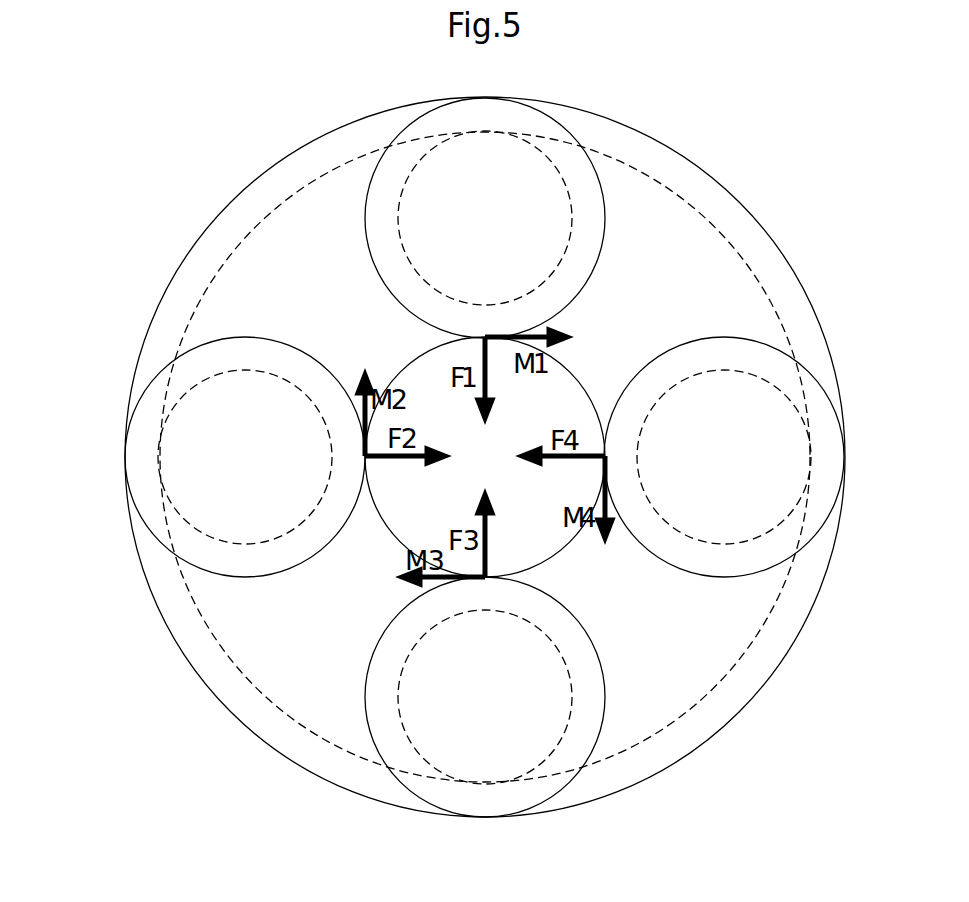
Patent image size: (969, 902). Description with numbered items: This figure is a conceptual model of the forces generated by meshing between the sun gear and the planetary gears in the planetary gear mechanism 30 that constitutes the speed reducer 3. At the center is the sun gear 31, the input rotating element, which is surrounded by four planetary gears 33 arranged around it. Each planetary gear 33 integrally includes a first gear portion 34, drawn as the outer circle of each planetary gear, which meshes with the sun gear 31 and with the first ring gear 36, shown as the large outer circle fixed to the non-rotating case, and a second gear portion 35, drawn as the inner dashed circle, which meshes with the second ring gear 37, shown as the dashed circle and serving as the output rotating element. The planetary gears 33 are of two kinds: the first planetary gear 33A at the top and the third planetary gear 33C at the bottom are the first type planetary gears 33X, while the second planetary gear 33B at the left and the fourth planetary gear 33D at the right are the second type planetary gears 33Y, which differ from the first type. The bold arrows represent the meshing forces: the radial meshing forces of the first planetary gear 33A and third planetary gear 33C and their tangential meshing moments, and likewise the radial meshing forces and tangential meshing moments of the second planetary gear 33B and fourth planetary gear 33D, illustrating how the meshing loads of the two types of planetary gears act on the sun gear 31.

The planetary gear mechanism 30 is at (482, 450).
The speed reducer 3 is at (482, 450).
The sun gear 31 is at (582, 382).
The planetary gears 33 is at (482, 464).
The first planetary gear 33A is at (613, 196).
The second planetary gear 33B is at (263, 308).
The third planetary gear 33C is at (335, 687).
The fourth planetary gear 33D is at (705, 600).
The first type planetary gears 33X is at (491, 464).
The second type planetary gears 33Y is at (482, 454).
The first gear portion 34 is at (560, 120).
The second gear portion 35 is at (565, 175).
The first ring gear 36 is at (805, 297).
The second ring gear 37 is at (740, 247).